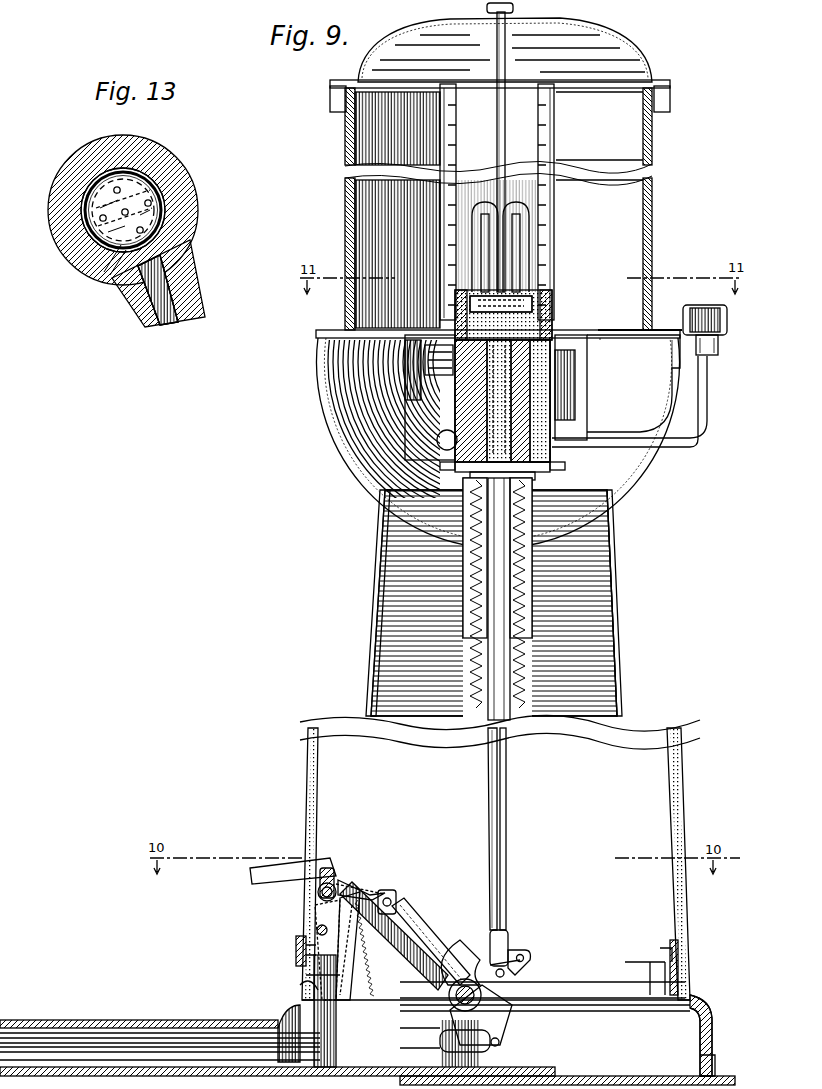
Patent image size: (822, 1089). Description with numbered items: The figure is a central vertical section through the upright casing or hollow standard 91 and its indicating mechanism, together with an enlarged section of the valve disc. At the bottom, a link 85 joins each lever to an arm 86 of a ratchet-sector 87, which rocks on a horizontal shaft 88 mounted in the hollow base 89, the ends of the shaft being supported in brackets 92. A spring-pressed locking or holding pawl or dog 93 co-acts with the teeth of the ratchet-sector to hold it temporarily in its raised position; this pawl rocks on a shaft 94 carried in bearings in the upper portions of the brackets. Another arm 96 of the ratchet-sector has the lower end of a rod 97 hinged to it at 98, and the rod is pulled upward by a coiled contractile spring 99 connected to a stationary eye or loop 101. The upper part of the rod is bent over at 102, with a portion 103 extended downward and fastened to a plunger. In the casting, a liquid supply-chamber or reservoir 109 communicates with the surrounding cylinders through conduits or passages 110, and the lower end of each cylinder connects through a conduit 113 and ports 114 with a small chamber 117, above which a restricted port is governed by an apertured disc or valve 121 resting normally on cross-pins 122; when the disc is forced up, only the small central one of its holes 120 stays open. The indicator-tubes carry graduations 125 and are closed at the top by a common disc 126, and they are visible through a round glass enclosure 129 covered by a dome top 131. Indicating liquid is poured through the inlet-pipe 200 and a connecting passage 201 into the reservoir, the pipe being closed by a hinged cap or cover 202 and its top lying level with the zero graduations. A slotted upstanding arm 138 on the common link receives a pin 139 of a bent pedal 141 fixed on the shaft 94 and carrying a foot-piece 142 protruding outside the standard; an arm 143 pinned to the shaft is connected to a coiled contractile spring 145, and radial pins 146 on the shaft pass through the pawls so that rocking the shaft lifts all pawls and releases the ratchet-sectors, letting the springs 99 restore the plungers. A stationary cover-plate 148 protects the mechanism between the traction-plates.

In FIG. 9, the link 85 is at (210, 1040).
In FIG. 9, the arm 86 is at (492, 1022).
In FIG. 9, the ratchet-sector 87 is at (392, 912).
In FIG. 9, the horizontal shaft 88 is at (467, 980).
In FIG. 9, the hollow base 89 is at (712, 1018).
In FIG. 9, the upright casing or hollow standard 91 is at (670, 792).
In FIG. 9, the brackets 92 is at (430, 925).
In FIG. 9, the locking or holding pawl or dog 93 is at (352, 890).
In FIG. 9, the shaft 94 is at (318, 895).
In FIG. 9, the arm 96 is at (523, 950).
In FIG. 9, the rod 97 is at (500, 832).
In FIG. 9, the hinge 98 is at (508, 972).
In FIG. 9, the coiled contractile spring 99 is at (524, 666).
In FIG. 9, the stationary eye or loop 101 is at (522, 474).
In FIG. 9, the bent-over portion 102 is at (512, 204).
In FIG. 9, the downwardly extended portion 103 is at (522, 272).
In FIG. 9, the liquid supply-chamber or reservoir 109 is at (488, 398).
In FIG. 9, the conduits or passages 110 is at (500, 372).
In FIG. 13, the conduit 113 is at (186, 292).
In FIG. 13, the ports 114 is at (140, 172).
In FIG. 13, the small chamber 117 is at (150, 221).
In FIG. 13, the holes 120 is at (170, 210).
In FIG. 13, the apertured disc or valve 121 is at (92, 190).
In FIG. 9, the apertured disc or valve 121 is at (456, 133).
In FIG. 13, the cross-pins 122 is at (110, 272).
In FIG. 9, the graduations 125 is at (554, 197).
In FIG. 9, the disc 126 is at (460, 82).
In FIG. 9, the round glass enclosure 129 is at (345, 229).
In FIG. 9, the dome top 131 is at (415, 30).
In FIG. 9, the slotted upstanding arm 138 is at (282, 1022).
In FIG. 9, the pin 139 is at (300, 992).
In FIG. 9, the bent pedal 141 is at (330, 910).
In FIG. 9, the foot-piece 142 is at (266, 868).
In FIG. 9, the arm 143 is at (390, 890).
In FIG. 9, the coiled contractile springs 145 is at (420, 980).
In FIG. 9, the radial pins 146 is at (333, 878).
In FIG. 9, the stationary cover-plate 148 is at (97, 1022).
In FIG. 9, the inlet-pipe 200 is at (692, 448).
In FIG. 9, the connecting passage 201 is at (555, 330).
In FIG. 9, the hinged cap or cover 202 is at (700, 306).